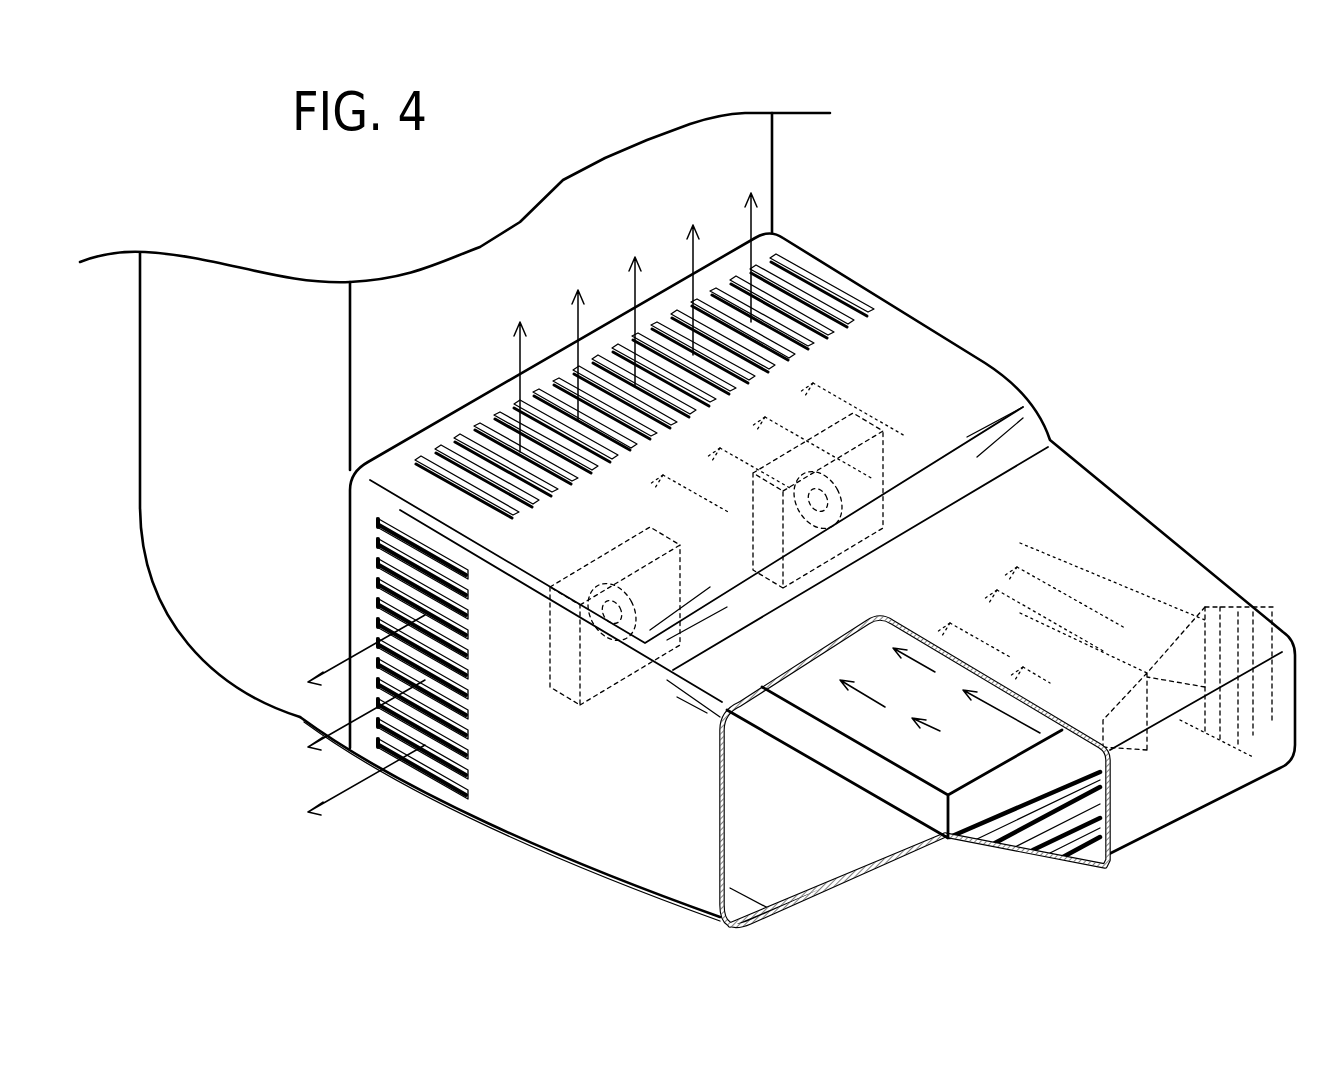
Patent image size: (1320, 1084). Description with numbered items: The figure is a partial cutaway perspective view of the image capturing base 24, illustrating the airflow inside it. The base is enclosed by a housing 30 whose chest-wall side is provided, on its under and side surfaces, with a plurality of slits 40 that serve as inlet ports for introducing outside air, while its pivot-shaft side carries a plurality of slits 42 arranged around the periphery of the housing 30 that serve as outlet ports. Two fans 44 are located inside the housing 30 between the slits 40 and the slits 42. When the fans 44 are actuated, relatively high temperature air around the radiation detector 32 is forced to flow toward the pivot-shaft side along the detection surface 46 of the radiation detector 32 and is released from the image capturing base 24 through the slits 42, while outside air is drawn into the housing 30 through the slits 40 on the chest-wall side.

The image capturing base 24 is at (487, 806).
The housing 30 is at (520, 790).
The radiation detector 32 is at (885, 785).
The slits 40 is at (1010, 757).
The slits 42 is at (842, 296).
The fans 44 is at (853, 413).
The detection surface 46 is at (872, 720).